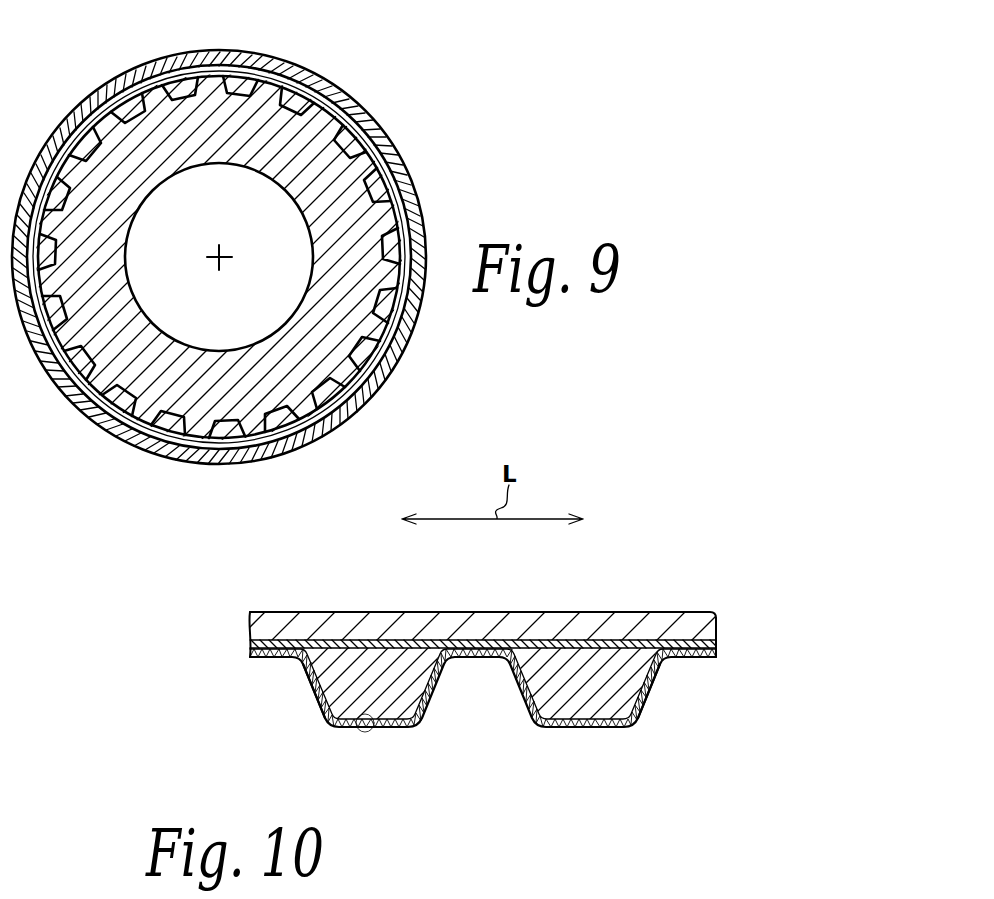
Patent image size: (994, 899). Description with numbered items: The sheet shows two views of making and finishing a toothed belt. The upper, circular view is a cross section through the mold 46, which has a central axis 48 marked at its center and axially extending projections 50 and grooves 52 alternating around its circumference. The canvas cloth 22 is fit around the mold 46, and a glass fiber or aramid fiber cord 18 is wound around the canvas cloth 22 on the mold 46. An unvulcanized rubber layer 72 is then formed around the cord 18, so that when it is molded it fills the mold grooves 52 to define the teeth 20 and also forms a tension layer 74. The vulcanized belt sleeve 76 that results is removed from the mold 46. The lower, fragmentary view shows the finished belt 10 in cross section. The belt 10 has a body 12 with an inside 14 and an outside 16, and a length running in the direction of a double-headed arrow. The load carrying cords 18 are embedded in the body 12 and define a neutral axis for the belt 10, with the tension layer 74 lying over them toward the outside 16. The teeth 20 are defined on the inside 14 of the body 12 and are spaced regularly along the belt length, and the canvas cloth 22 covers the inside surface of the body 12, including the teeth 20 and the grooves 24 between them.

In FIG. 10, the belt 10 is at (736, 592).
In FIG. 10, the body 12 is at (722, 645).
In FIG. 10, the inside 14 is at (393, 727).
In FIG. 10, the outside 16 is at (487, 612).
In FIG. 9, the load carrying cords 18 is at (357, 133).
In FIG. 10, the load carrying cords 18 is at (350, 640).
In FIG. 10, the teeth 20 is at (327, 717).
In FIG. 10, the canvas cloth 22 is at (545, 723).
In FIG. 10, the grooves 24 is at (484, 658).
In FIG. 9, the mold 46 is at (388, 223).
In FIG. 9, the central axis 48 is at (224, 255).
In FIG. 9, the projections 50 is at (197, 440).
In FIG. 9, the grooves 52 is at (173, 407).
In FIG. 9, the unvulcanized rubber layer 72 is at (307, 72).
In FIG. 10, the tension layer 74 is at (715, 629).
In FIG. 9, the vulcanized belt sleeve 76 is at (417, 375).